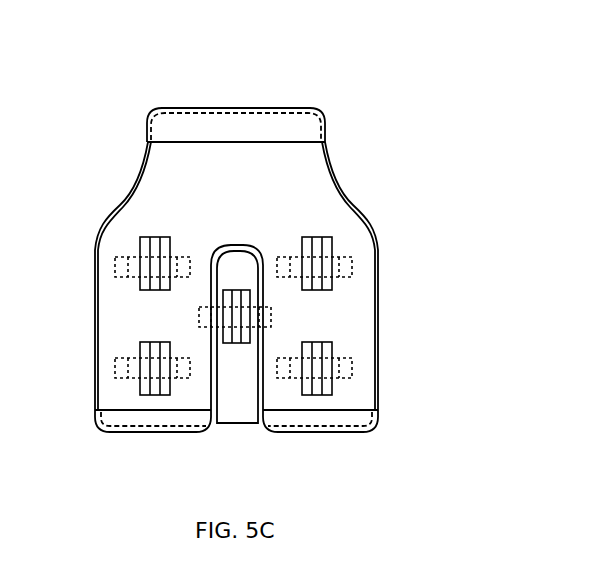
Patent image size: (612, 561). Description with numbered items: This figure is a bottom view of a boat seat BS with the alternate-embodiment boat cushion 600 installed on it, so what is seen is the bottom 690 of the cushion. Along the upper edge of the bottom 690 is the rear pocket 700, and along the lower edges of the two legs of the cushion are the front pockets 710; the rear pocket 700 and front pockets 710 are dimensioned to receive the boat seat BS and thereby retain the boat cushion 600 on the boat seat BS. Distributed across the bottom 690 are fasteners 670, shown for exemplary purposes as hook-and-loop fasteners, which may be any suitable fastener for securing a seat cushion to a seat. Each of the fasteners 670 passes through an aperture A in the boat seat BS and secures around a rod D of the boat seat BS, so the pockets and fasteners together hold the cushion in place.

The boat cushion 600 is at (347, 190).
The bottom 690 is at (273, 152).
The rear pocket 700 is at (247, 127).
The boat seat BS is at (135, 188).
The rods D is at (313, 252).
The apertures A is at (325, 283).
The fasteners 670 is at (347, 377).
The front pockets 710 is at (315, 418).